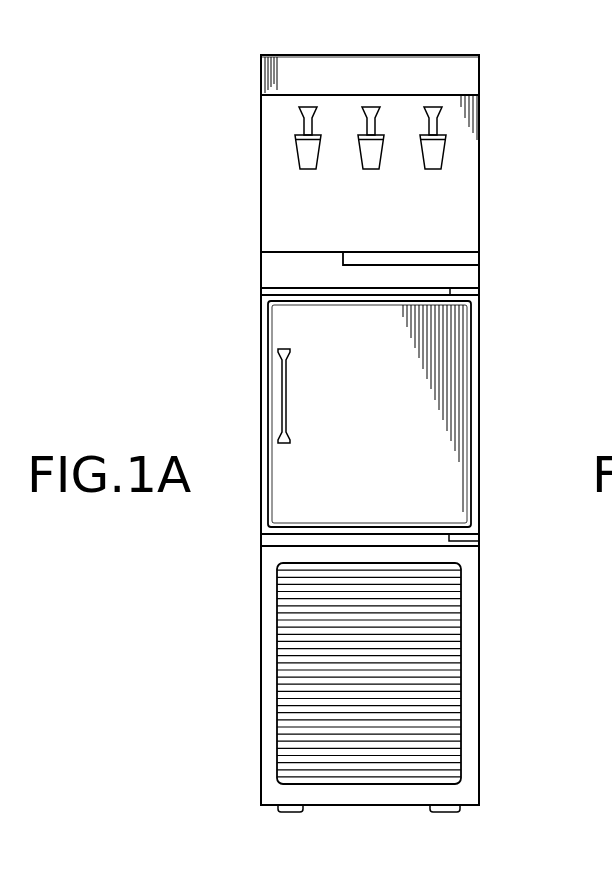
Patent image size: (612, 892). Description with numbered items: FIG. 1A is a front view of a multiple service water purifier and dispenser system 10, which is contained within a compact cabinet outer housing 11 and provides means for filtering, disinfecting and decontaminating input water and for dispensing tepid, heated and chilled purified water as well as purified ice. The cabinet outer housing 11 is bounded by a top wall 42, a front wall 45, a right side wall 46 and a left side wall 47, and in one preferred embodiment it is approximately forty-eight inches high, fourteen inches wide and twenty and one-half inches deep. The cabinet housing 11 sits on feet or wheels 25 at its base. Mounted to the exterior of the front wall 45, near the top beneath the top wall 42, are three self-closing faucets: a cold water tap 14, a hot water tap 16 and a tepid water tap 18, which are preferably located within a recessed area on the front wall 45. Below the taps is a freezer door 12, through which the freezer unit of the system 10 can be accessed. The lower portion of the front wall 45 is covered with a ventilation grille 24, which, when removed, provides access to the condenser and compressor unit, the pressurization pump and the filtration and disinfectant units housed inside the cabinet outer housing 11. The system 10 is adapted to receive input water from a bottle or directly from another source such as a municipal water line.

The multiple service water purifier and dispenser system 10 is at (212, 570).
The cabinet outer housing 11 is at (491, 721).
The freezer door 12 is at (372, 412).
The cold water tap 14 is at (372, 147).
The hot water tap 16 is at (433, 147).
The tepid water tap 18 is at (305, 148).
The ventilation grille 24 is at (337, 653).
The feet or wheels 25 is at (278, 808).
The top wall 42 is at (300, 55).
The front wall 45 is at (413, 808).
The right side wall 46 is at (479, 277).
The left side wall 47 is at (262, 270).